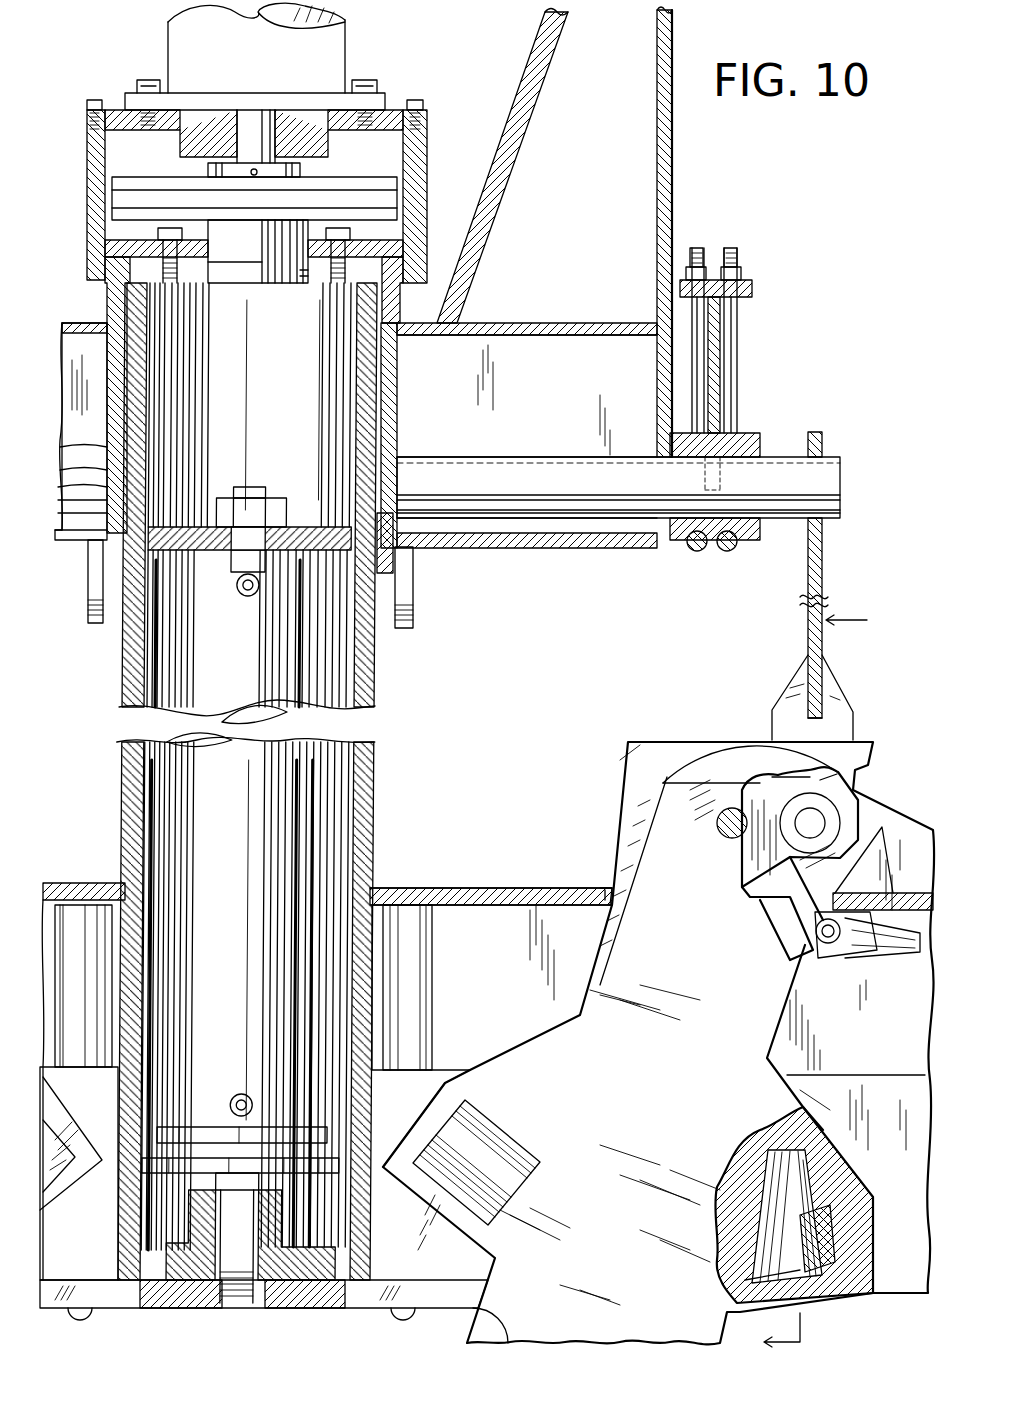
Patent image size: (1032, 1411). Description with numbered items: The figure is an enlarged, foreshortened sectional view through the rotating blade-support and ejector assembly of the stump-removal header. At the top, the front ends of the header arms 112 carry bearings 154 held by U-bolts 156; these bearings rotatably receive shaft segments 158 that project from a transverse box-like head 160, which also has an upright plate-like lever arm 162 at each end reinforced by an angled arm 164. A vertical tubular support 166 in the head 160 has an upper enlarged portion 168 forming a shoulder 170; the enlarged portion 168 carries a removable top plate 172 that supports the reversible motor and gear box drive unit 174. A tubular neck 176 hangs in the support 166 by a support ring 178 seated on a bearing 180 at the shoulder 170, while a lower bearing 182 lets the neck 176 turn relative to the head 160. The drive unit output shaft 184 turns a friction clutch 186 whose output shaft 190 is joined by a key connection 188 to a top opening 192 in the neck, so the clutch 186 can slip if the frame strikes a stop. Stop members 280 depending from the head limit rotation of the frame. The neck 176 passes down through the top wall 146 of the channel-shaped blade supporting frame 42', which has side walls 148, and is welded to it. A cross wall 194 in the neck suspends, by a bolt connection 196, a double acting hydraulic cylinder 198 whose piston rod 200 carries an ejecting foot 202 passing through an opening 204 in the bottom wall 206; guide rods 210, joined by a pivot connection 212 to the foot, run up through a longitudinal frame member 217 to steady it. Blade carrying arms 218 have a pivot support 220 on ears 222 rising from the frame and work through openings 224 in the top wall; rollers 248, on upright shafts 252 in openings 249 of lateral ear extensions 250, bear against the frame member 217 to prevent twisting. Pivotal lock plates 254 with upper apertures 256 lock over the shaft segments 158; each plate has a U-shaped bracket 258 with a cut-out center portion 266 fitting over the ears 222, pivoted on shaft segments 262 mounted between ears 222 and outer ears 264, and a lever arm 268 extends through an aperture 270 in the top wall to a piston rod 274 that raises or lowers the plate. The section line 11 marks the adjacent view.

The motor and gear box drive unit 174 is at (180, 38).
The top plate 172 is at (125, 100).
The output shaft 184 is at (252, 118).
The upper enlarged portion 168 is at (418, 162).
The friction clutch 186 is at (392, 198).
The output shaft of the clutch 190 is at (258, 265).
The support ring 178 is at (397, 247).
The top opening 192 is at (212, 263).
The key connection 188 is at (302, 280).
The bearing 180 is at (118, 300).
The shoulder 170 is at (396, 284).
The angled arms 164 is at (540, 72).
The lever arm 162 is at (668, 150).
The U-bolts 156 is at (730, 248).
The header arms 112 is at (716, 375).
The bearings 154 is at (757, 542).
The tubular support 166 is at (402, 378).
The head 160 is at (520, 546).
The shaft segments 158 is at (88, 512).
The upper apertures 256 is at (823, 450).
The lock plates 254 is at (806, 620).
The section line 11 is at (815, 975).
The bearing 182 is at (396, 556).
The stop members 280 is at (92, 620).
The tubular neck 176 is at (378, 708).
The double acting hydraulic cylinder 198 is at (185, 806).
The cross wall 194 is at (299, 525).
The bolt connection 196 is at (253, 488).
The piston rod 200 is at (205, 1180).
The bottom wall 206 is at (143, 1250).
The opening 204 is at (170, 1274).
The ejecting foot 202 is at (372, 1308).
The pivot connection 212 is at (88, 1309).
The guide rods 210 is at (80, 906).
The frame member 217 is at (100, 1102).
The ears 222 is at (628, 773).
The blade carrying arms 218 is at (645, 874).
The openings 224 is at (602, 893).
The blade supporting frame 42' is at (492, 877).
The top wall 146 is at (482, 898).
The side walls 148 is at (514, 932).
The U-shaped bracket 258 is at (838, 708).
The center portion 266 is at (854, 735).
The pivot support 220 is at (735, 808).
The shaft segments 262 is at (826, 792).
The lever arm 268 is at (812, 906).
The aperture 270 is at (878, 895).
The piston rod 274 is at (880, 948).
The ears 264 is at (927, 827).
The lateral ear extensions 250 is at (453, 1095).
The rollers 248 is at (488, 1135).
The upright shafts 252 is at (808, 1300).
The openings 249 is at (858, 1292).